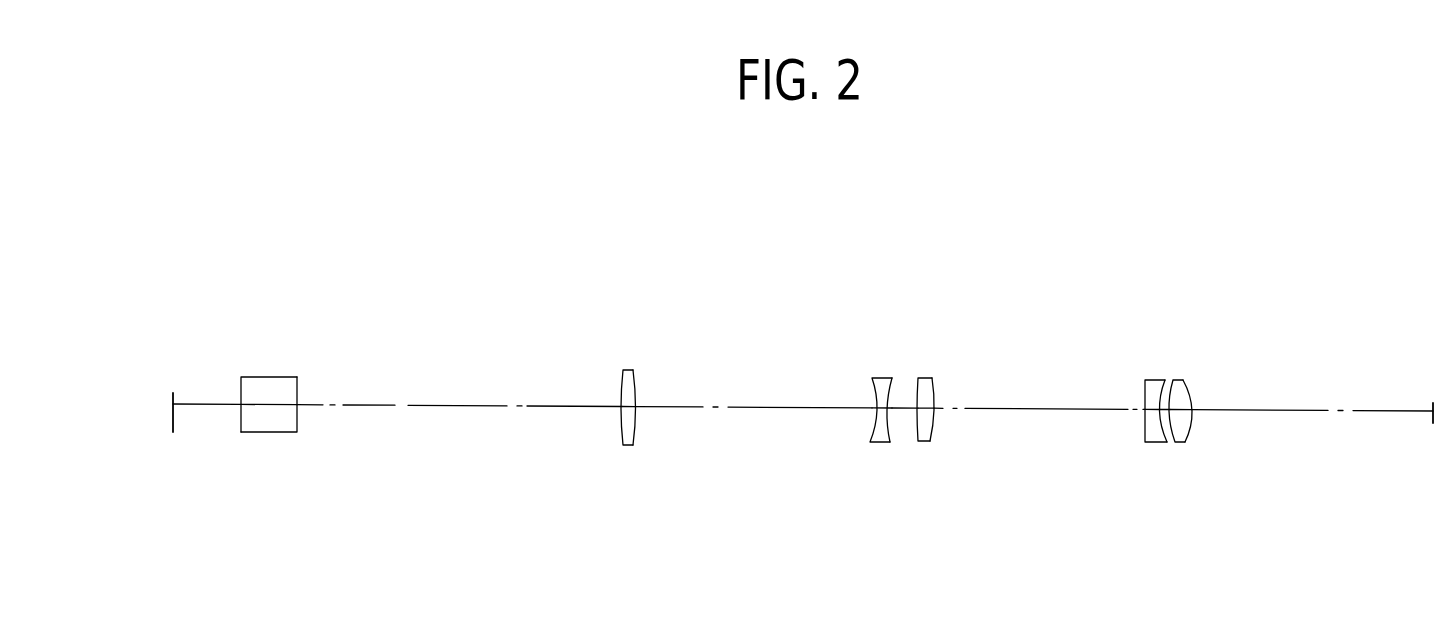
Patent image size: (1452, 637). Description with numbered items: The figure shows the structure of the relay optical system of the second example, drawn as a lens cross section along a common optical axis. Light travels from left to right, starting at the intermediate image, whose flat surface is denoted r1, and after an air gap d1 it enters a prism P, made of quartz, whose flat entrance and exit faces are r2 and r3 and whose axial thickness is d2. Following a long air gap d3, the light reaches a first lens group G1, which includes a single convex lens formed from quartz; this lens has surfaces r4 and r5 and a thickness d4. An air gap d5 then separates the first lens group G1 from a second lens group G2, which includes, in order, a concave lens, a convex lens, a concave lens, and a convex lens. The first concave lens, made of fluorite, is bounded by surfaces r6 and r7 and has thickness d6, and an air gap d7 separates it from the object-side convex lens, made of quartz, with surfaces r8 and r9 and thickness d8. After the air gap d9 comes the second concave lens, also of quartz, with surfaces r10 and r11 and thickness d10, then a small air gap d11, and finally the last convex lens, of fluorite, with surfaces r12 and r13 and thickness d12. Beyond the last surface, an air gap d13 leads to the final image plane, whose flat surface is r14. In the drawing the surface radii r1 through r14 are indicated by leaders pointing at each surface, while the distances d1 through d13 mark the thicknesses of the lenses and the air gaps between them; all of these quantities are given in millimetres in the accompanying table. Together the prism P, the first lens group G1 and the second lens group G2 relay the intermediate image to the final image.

The radius of curvature of intermediate image surface r1 is at (174, 384).
The radius of curvature of prism entrance surface r2 is at (240, 388).
The radius of curvature of prism exit surface r3 is at (298, 390).
The radius of curvature of fourth lens surface r4 is at (622, 380).
The radius of curvature of fifth lens surface r5 is at (637, 382).
The radius of curvature of sixth lens surface r6 is at (872, 382).
The radius of curvature of seventh lens surface r7 is at (892, 382).
The radius of curvature of eighth lens surface r8 is at (918, 380).
The radius of curvature of ninth lens surface r9 is at (935, 381).
The radius of curvature of tenth lens surface r10 is at (1145, 398).
The radius of curvature of eleventh lens surface r11 is at (1162, 380).
The radius of curvature of twelfth lens surface r12 is at (1172, 378).
The radius of curvature of thirteenth lens surface r13 is at (1190, 390).
The radius of curvature of final image surface r14 is at (1433, 401).
The air gap between intermediate image and prism d1 is at (203, 404).
The thickness of prism d2 is at (280, 405).
The air gap between prism and first lens group d3 is at (440, 406).
The thickness of first lens group convex lens d4 is at (626, 413).
The air gap between first and second lens groups d5 is at (690, 408).
The thickness of first concave lens d6 is at (880, 412).
The air gap between first concave lens and convex lens d7 is at (903, 410).
The thickness of object-side convex lens of second lens group d8 is at (932, 413).
The air gap between convex lens and second concave lens d9 is at (1040, 408).
The thickness of second concave lens d10 is at (1148, 412).
The air gap between second concave lens and last convex lens d11 is at (1160, 408).
The thickness of last convex lens d12 is at (1192, 418).
The air gap between second lens group and final image d13 is at (1313, 410).
The prism P is at (270, 422).
The first lens group G1 is at (616, 420).
The second lens group G2 is at (1029, 417).